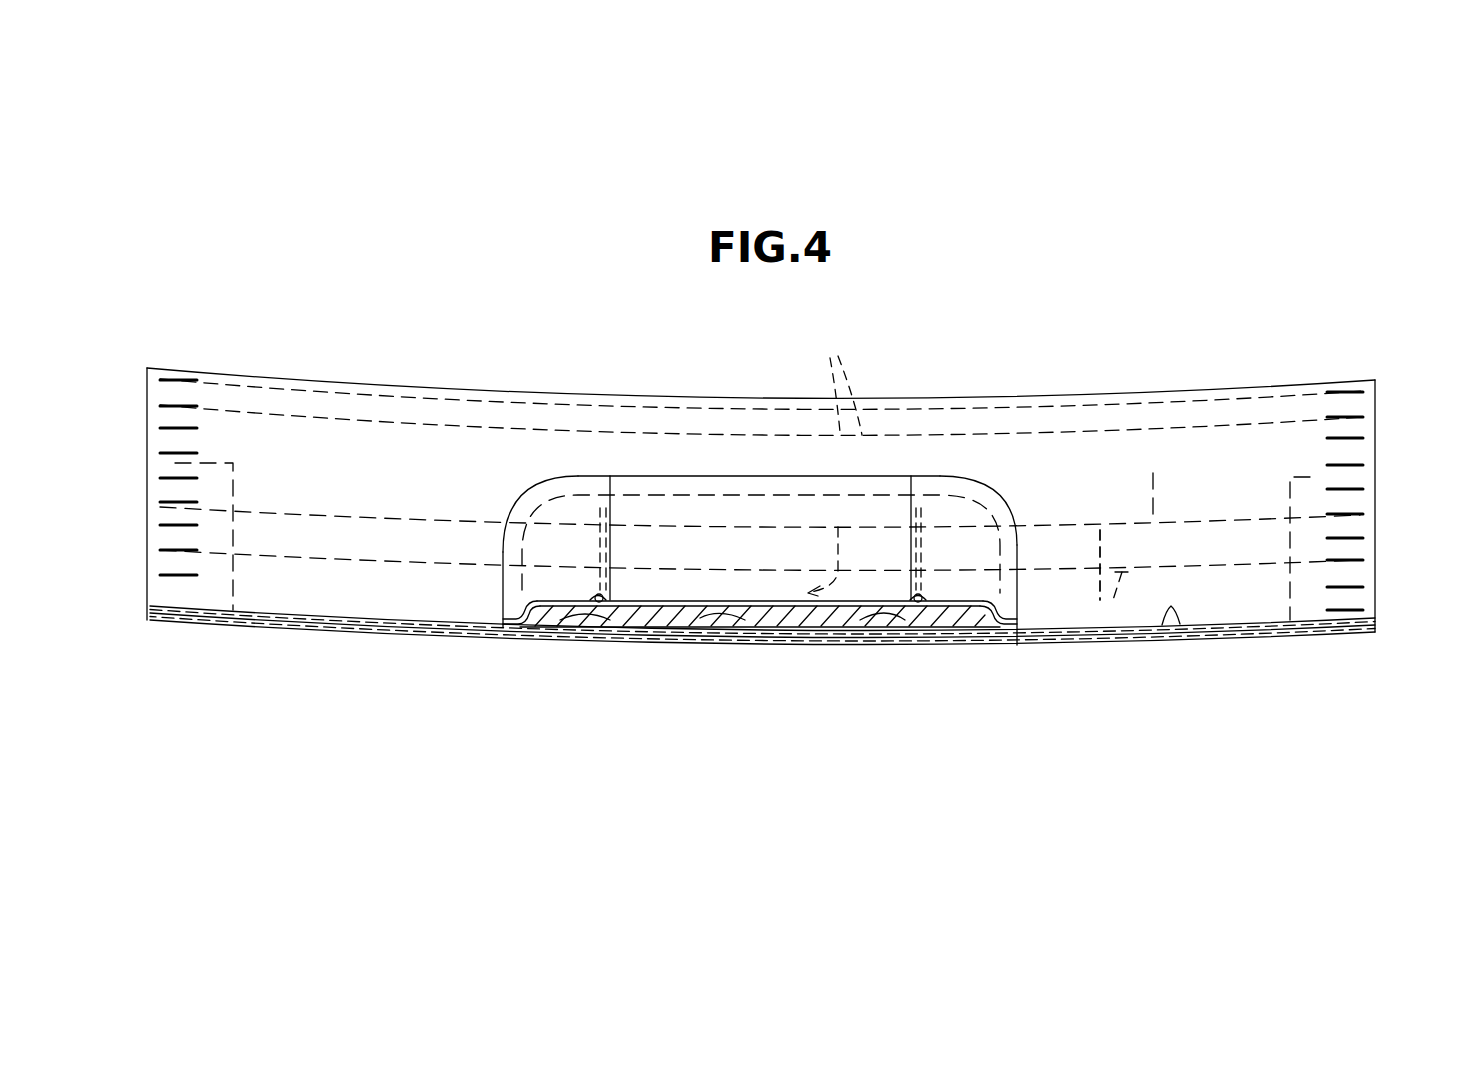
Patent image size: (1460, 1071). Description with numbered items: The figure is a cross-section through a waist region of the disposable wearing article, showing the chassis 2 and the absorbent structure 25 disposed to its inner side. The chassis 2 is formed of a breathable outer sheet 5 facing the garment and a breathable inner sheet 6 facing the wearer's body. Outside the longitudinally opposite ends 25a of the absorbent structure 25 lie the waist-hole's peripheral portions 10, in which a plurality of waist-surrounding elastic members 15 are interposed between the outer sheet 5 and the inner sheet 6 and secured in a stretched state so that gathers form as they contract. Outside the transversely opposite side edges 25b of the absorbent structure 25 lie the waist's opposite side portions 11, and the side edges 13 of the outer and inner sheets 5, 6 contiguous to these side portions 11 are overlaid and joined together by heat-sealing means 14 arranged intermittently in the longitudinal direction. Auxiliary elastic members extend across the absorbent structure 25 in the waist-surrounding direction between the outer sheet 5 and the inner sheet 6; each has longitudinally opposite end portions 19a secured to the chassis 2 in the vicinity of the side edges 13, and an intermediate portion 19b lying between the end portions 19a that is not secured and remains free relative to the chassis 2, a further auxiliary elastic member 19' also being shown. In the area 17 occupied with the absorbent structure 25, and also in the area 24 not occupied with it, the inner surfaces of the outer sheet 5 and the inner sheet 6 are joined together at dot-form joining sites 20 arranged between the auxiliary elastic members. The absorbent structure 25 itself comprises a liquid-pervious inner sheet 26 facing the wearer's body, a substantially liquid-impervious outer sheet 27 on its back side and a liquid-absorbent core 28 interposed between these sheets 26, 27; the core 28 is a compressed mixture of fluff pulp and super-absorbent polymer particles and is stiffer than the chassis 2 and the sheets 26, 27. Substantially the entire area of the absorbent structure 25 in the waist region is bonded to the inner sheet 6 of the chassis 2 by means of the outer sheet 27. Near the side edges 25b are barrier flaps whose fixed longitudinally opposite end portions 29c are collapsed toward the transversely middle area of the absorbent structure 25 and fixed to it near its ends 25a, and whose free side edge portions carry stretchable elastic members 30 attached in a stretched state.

The chassis 2 is at (1378, 380).
The outer sheet 5 is at (1212, 640).
The inner sheet 6 is at (1173, 622).
The waist-hole's peripheral portions 10 is at (731, 443).
The waist's opposite side portions 11 is at (300, 537).
The side edges 13 is at (150, 426).
The heat-sealing means 14 is at (190, 380).
The waist-surrounding elastic members 15 is at (829, 384).
The area 17 is at (708, 538).
The rib 19' is at (1102, 578).
The longitudinally opposite end portions 19a is at (165, 513).
The intermediate portion 19b is at (970, 525).
The joining sites 20 is at (652, 648).
The area 24 is at (381, 592).
The absorbent structure 25 is at (1004, 512).
The longitudinally opposite ends 25a is at (840, 476).
The transversely opposite side edges 25b is at (503, 598).
The inner sheet 26 is at (875, 628).
The outer sheet 27 is at (921, 625).
The liquid-absorbent core 28 is at (828, 626).
The fixed longitudinally opposite end portions 29c is at (536, 535).
The stretchable elastic members 30 is at (606, 598).